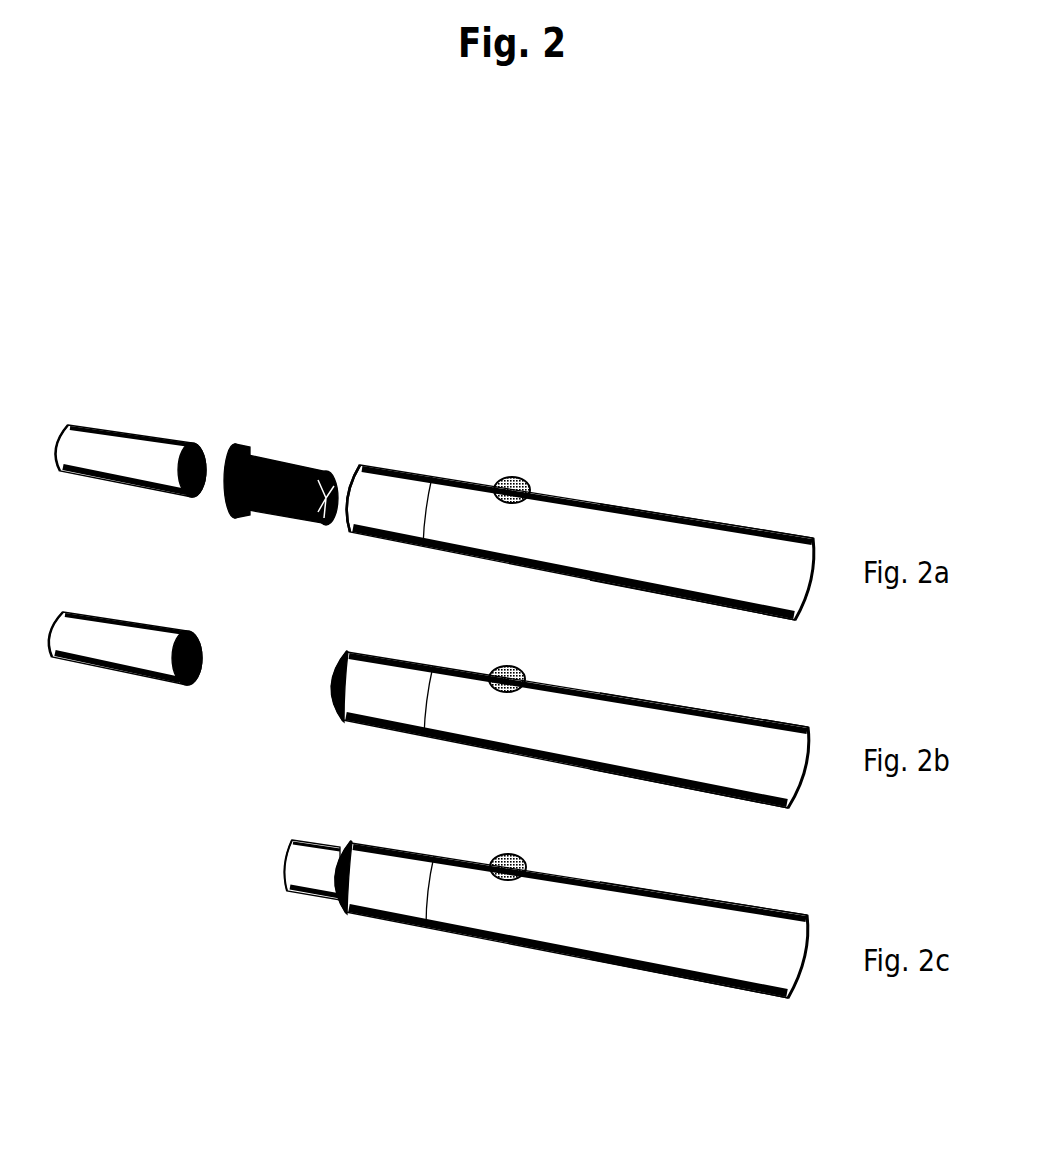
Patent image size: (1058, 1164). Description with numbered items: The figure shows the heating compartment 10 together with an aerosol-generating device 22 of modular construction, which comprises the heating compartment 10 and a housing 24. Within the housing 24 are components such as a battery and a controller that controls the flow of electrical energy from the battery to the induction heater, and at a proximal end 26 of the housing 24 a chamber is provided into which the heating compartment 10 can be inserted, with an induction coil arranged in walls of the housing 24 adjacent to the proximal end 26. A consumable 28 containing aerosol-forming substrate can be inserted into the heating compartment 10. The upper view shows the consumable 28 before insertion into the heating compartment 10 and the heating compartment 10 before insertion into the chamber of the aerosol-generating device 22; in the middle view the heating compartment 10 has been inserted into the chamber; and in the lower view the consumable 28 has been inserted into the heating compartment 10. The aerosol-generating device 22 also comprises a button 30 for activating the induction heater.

In FIG. 2A, the heating compartment 10 is at (278, 435).
In FIG. 2B, the heating compartment 10 is at (345, 660).
In FIG. 2C, the heating compartment 10 is at (345, 858).
In FIG. 2A, the aerosol-generating device 22 is at (455, 455).
In FIG. 2B, the aerosol-generating device 22 is at (433, 652).
In FIG. 2C, the aerosol-generating device 22 is at (440, 845).
In FIG. 2A, the housing 24 is at (618, 505).
In FIG. 2B, the housing 24 is at (646, 738).
In FIG. 2C, the housing 24 is at (650, 938).
In FIG. 2A, the proximal end 26 is at (350, 462).
In FIG. 2B, the proximal end 26 is at (330, 662).
In FIG. 2C, the proximal end 26 is at (340, 838).
In FIG. 2A, the consumable 28 is at (128, 432).
In FIG. 2B, the consumable 28 is at (117, 635).
In FIG. 2C, the consumable 28 is at (297, 862).
In FIG. 2A, the button 30 is at (512, 480).
In FIG. 2B, the button 30 is at (507, 682).
In FIG. 2C, the button 30 is at (505, 872).